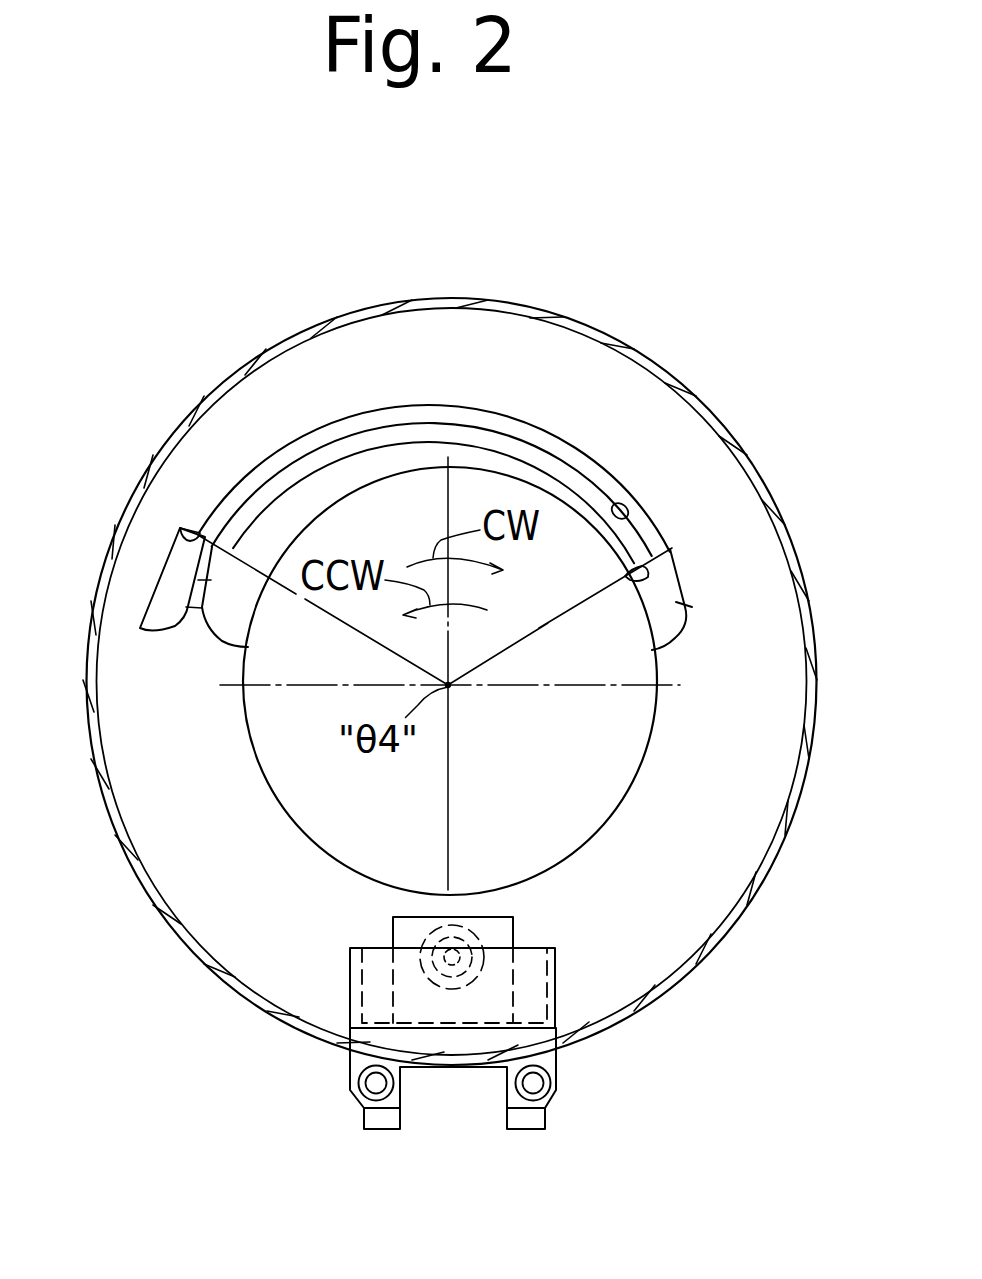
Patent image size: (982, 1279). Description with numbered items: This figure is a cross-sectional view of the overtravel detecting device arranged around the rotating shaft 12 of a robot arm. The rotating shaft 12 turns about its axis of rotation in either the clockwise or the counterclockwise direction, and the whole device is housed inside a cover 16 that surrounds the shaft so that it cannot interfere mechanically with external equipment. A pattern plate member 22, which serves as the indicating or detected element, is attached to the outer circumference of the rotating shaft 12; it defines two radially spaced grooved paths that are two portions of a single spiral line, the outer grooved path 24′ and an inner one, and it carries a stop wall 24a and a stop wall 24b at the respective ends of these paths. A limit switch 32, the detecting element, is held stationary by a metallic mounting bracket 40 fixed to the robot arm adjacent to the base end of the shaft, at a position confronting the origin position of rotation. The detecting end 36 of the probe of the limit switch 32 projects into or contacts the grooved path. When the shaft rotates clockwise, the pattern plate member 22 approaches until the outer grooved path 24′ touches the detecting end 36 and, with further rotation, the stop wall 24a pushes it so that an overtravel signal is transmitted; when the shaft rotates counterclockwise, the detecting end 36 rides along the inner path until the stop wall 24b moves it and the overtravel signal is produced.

The rotating shaft 12 is at (288, 780).
The cover 16 is at (258, 361).
The pattern plate member 22 is at (692, 607).
The outer grooved path 24′ is at (522, 414).
The stop wall 24a is at (191, 524).
The stop wall 24b is at (628, 579).
The limit switch 32 is at (515, 933).
The detecting end 36 is at (432, 963).
The mounting bracket 40 is at (552, 1005).